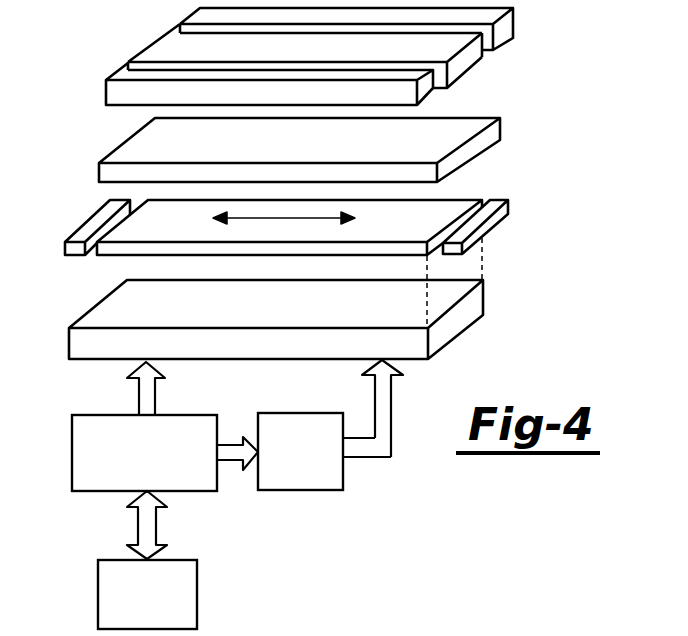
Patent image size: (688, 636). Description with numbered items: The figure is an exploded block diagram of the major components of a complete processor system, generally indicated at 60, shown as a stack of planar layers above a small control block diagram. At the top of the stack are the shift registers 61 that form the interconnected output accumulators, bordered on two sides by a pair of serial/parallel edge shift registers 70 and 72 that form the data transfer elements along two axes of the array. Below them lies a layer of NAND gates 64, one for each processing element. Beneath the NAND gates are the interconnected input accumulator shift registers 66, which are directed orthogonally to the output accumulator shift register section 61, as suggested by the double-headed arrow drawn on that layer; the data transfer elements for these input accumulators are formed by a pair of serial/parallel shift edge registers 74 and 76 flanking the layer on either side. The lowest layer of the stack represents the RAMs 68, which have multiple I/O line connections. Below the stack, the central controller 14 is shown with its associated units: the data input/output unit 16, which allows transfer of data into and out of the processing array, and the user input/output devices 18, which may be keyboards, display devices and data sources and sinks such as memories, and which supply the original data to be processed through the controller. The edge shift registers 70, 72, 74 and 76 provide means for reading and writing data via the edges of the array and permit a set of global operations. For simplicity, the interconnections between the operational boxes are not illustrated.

The processor system 60 is at (308, 181).
The serial/parallel edge shift register 70 is at (507, 27).
The output accumulator shift registers 61 is at (472, 58).
The serial/parallel edge shift register 72 is at (425, 88).
The NAND gates 64 is at (333, 151).
The input accumulator shift registers 66 is at (397, 241).
The serial/parallel shift edge register 74 is at (88, 223).
The serial/parallel shift edge register 76 is at (493, 223).
The RAMs 68 is at (487, 300).
The central controller 14 is at (72, 458).
The data input/output unit 16 is at (312, 490).
The user input/output devices 18 is at (198, 582).